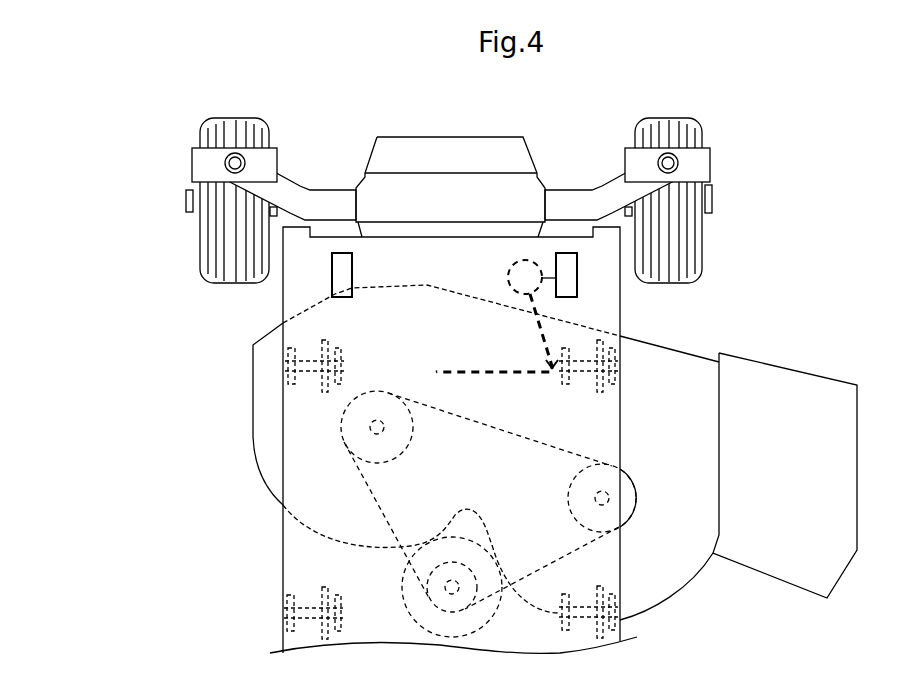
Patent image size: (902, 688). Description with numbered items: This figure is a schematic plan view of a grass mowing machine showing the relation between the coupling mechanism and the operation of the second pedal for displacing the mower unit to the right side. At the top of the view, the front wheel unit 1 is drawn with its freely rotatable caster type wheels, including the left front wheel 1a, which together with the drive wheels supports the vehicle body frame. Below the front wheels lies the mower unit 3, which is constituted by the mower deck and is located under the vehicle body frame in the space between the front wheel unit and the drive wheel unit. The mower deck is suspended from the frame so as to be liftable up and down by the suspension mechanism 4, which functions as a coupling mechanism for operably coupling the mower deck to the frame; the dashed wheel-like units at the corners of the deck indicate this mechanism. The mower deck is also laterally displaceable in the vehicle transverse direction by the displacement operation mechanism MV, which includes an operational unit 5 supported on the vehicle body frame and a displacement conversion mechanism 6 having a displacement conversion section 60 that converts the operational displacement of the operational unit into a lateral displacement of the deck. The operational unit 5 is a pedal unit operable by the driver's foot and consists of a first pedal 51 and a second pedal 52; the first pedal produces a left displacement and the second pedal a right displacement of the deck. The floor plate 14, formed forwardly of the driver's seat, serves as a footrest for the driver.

The front wheel unit 1 is at (469, 200).
The left front wheel 1a is at (197, 235).
The mower unit 3 is at (245, 440).
The suspension mechanism 4 is at (298, 338).
The operational unit 5 is at (454, 216).
The first pedal 51 is at (340, 252).
The second pedal 52 is at (567, 252).
The displacement conversion mechanism 6 is at (488, 280).
The displacement conversion section 60 is at (513, 265).
The floor plate 14 is at (340, 578).
The displacement operation mechanism MV is at (509, 248).